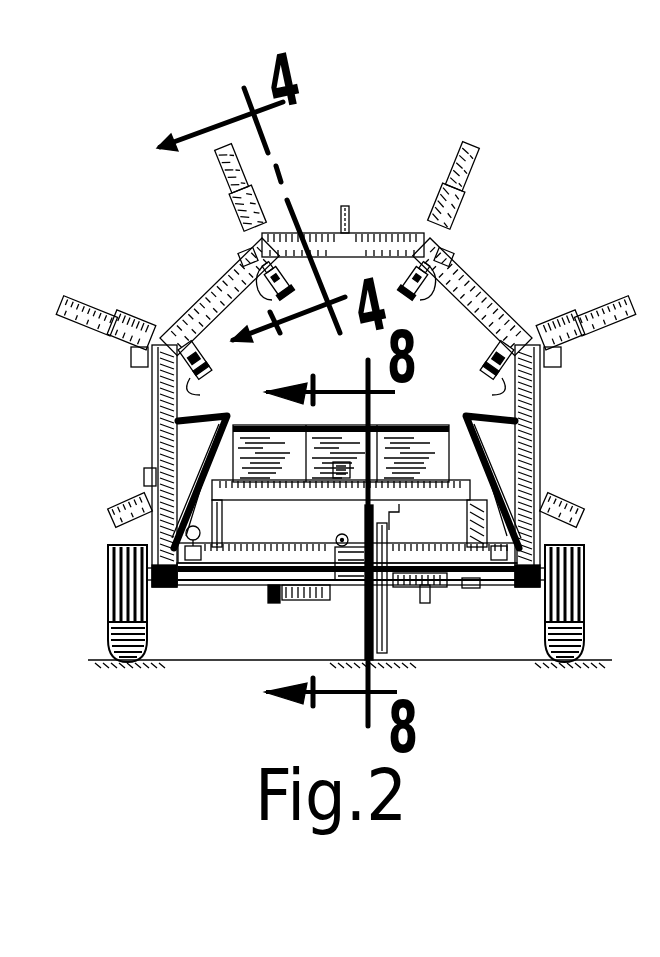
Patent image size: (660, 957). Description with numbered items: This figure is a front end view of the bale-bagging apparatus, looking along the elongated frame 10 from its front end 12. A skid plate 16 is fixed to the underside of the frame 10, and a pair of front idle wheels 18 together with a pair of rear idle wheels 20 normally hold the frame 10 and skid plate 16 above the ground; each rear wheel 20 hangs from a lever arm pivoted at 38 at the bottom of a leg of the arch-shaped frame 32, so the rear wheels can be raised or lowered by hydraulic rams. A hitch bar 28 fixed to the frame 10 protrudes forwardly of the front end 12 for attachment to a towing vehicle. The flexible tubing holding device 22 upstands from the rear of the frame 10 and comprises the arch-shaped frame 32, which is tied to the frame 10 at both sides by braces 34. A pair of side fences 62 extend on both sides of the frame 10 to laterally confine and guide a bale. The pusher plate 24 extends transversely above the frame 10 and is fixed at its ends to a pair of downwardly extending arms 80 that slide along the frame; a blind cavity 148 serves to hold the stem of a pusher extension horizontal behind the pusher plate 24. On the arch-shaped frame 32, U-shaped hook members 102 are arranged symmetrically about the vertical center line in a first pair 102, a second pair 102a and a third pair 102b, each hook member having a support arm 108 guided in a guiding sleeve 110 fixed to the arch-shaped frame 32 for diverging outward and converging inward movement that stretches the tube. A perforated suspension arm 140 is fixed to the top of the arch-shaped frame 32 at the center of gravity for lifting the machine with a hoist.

The frame 10 is at (497, 580).
The front end 12 is at (470, 583).
The skid plate 16 is at (447, 585).
The front idle wheels 18 is at (117, 587).
The rear idle wheels 20 is at (147, 657).
The flexible tubing holding device 22 is at (487, 278).
The pusher plate 24 is at (440, 427).
The hitch bar 28 is at (330, 600).
The arch-shaped frame 32 is at (490, 330).
The braces 34 is at (157, 437).
The pivot 38 is at (388, 655).
The side fences 62 is at (187, 413).
The downwardly extending arms 80 is at (217, 513).
The hook members 102 is at (153, 473).
The second pair of hook members 102a is at (207, 317).
The third pair of hook members 102b is at (265, 290).
The support arm 108 is at (230, 157).
The guiding sleeve 110 is at (252, 200).
The perforated suspension arm 140 is at (350, 217).
The blind cavity 148 is at (343, 473).